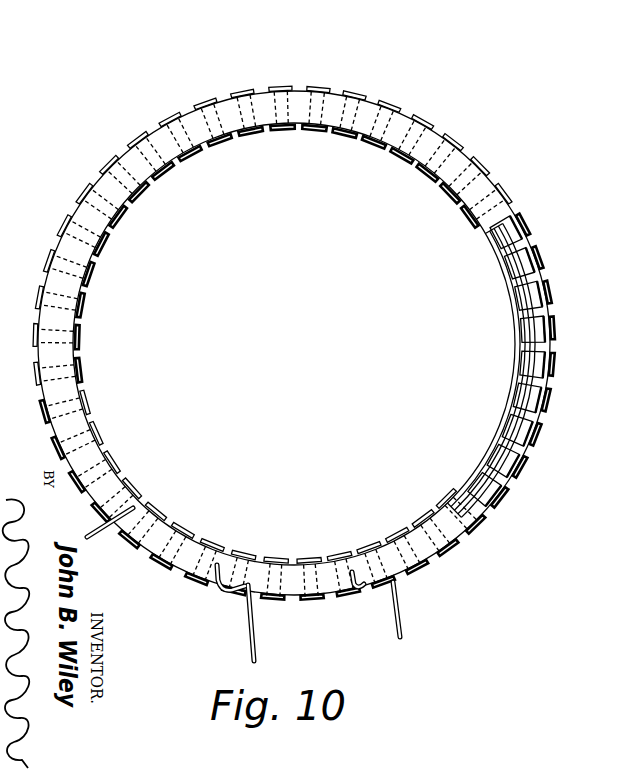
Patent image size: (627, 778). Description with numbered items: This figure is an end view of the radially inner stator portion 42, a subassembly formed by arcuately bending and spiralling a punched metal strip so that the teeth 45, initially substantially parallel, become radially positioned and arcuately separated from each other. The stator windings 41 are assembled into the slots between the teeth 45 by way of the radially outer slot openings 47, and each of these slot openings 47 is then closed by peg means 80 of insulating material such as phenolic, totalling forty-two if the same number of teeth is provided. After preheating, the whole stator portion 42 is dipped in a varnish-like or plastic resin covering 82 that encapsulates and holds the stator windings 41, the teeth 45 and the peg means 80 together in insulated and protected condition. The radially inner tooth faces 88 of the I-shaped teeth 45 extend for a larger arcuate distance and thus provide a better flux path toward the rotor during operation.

The teeth 45 is at (323, 325).
The slot openings 47 is at (375, 102).
The radially inner tooth faces 88 is at (312, 128).
The radially inner stator portion 42 is at (442, 170).
The stator windings 41 is at (530, 343).
The peg means 80 is at (553, 335).
The resin covering 82 is at (203, 560).